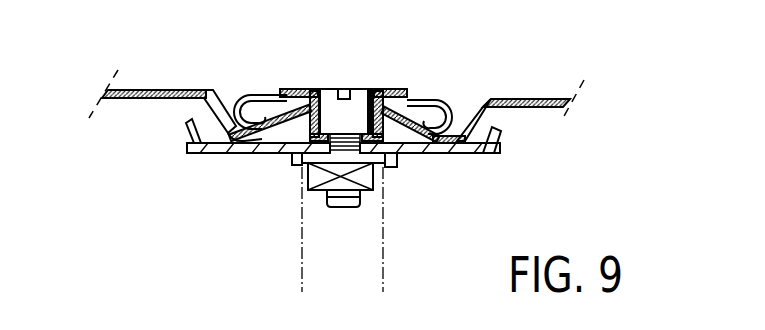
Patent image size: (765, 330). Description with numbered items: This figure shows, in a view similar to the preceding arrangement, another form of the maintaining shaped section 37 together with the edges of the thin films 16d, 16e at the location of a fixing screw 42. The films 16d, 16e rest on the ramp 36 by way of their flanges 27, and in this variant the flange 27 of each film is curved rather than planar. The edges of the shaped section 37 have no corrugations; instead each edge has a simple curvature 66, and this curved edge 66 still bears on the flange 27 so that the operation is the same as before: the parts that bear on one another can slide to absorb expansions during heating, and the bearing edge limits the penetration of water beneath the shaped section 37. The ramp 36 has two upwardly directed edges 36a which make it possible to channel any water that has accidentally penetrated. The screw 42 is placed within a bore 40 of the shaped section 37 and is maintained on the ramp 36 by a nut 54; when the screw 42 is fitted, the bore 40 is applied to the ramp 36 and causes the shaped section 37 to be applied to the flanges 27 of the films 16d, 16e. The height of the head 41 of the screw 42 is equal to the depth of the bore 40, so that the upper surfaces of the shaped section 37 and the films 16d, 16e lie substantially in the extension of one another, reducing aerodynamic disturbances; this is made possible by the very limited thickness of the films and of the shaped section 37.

The film 16e is at (133, 90).
The film 16d is at (560, 99).
The bore 40 is at (313, 117).
The screw 42 is at (329, 82).
The head of screw 41 is at (365, 89).
The shaped section 37 is at (431, 86).
The curvature 66 is at (448, 127).
The ramp 36 is at (196, 163).
The upwardly directed edge 36a is at (187, 126).
The flange 27 is at (426, 154).
The nut 54 is at (318, 175).